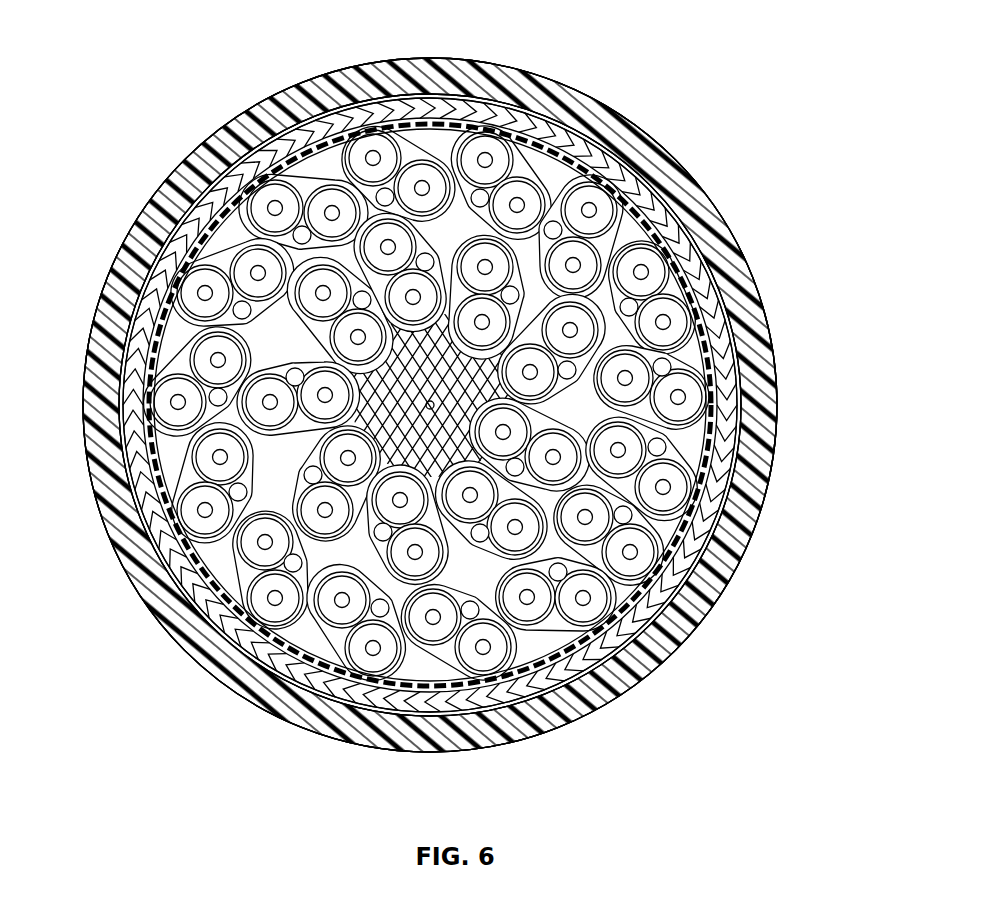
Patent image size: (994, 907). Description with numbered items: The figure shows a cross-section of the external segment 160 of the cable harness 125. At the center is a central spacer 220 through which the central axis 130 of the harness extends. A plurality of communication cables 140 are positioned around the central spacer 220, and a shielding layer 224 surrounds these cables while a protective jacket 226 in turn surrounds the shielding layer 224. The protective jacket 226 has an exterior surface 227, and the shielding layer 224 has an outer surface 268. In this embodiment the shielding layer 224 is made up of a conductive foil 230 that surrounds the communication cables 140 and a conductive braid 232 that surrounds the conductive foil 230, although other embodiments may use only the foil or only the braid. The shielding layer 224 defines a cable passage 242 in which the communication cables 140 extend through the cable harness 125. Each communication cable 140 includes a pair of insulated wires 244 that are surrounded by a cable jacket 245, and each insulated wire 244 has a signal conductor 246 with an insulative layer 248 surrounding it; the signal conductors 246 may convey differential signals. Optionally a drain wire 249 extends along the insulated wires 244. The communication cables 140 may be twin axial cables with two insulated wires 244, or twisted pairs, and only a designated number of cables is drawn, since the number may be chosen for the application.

The cable harness 125 is at (752, 58).
The central axis 130 is at (432, 407).
The communication cables 140 is at (392, 430).
The external segment 160 is at (680, 165).
The central spacer 220 is at (473, 395).
The shielding layer 224 is at (492, 80).
The protective jacket 226 is at (425, 75).
The exterior surface 227 is at (745, 238).
The conductive foil 230 is at (392, 122).
The conductive braid 232 is at (257, 110).
The cable passage 242 is at (268, 330).
The insulated wires 244 is at (190, 478).
The cable jacket 245 is at (213, 257).
The signal conductor 246 is at (373, 648).
The insulative layer 248 is at (296, 706).
The drain wire 249 is at (470, 610).
The outer surface 268 is at (738, 518).